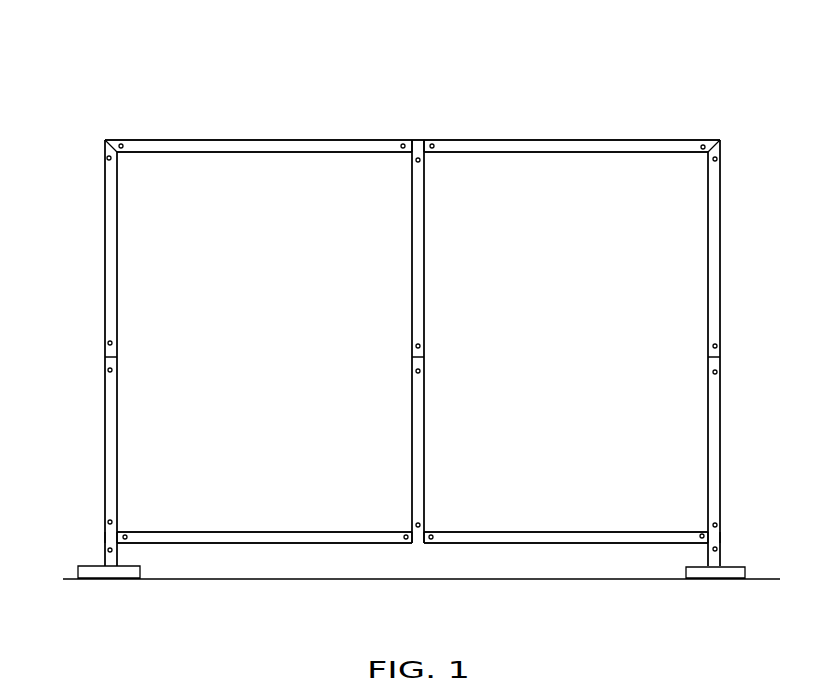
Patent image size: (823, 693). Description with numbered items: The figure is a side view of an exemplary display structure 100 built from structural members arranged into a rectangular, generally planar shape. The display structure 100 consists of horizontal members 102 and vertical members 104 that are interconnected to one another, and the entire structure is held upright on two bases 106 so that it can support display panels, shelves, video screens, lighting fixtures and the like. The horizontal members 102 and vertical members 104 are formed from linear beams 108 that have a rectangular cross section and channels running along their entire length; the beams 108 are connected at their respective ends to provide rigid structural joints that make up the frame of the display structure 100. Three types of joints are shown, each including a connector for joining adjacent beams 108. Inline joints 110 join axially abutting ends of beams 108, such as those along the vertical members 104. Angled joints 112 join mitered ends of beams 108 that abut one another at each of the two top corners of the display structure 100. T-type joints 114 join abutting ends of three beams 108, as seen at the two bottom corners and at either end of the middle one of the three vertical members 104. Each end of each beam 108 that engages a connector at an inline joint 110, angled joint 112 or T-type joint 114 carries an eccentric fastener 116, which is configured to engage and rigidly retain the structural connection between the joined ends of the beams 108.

The display structure 100 is at (628, 70).
The horizontal members 102 is at (238, 137).
The vertical members 104 is at (125, 343).
The bases 106 is at (97, 573).
The linear beams 108 is at (362, 152).
The inline joints 110 is at (118, 357).
The angled joints 112 is at (105, 140).
The T-type joints 114 is at (418, 148).
The eccentric fastener 116 is at (127, 170).